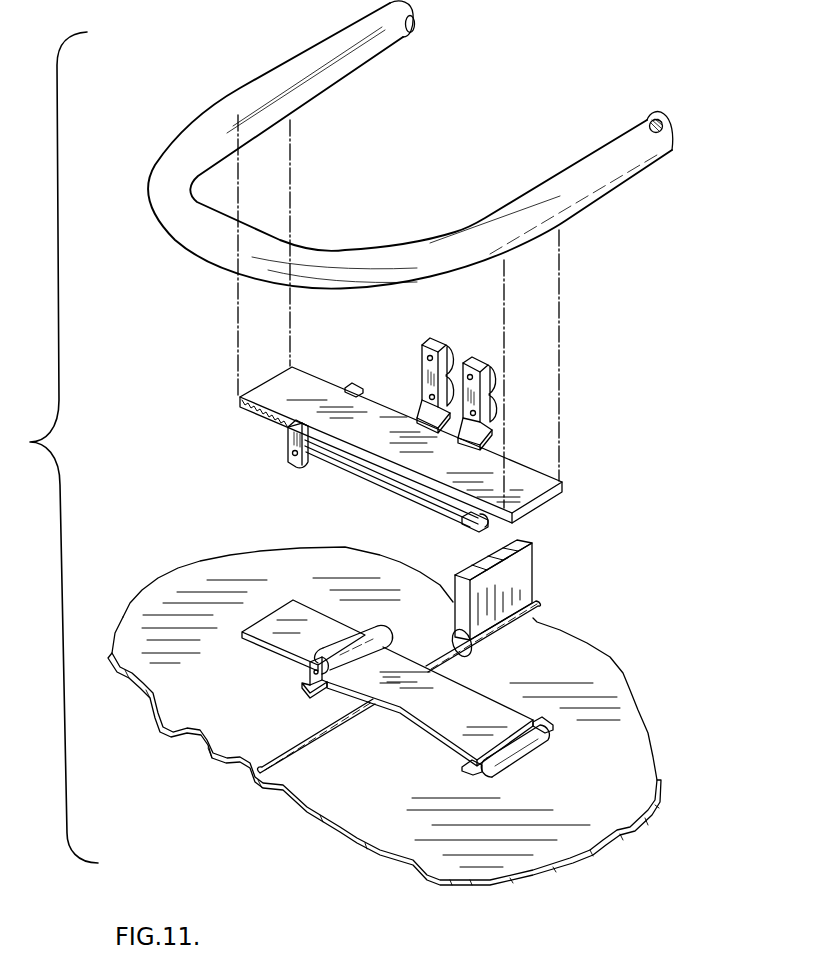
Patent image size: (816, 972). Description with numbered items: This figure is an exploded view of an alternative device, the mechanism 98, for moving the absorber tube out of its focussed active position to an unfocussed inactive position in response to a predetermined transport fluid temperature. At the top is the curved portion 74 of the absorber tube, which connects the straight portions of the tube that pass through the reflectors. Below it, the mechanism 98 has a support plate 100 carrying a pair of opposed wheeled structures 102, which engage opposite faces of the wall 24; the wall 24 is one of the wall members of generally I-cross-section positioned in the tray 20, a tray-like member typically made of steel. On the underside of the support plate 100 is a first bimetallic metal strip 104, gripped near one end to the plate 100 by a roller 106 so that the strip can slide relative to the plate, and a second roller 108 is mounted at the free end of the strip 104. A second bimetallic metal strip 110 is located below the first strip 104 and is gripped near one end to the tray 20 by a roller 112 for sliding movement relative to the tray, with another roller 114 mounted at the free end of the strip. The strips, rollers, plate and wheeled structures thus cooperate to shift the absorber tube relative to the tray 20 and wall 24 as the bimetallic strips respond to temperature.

The tray member 20 is at (373, 827).
The wall member 24 is at (513, 580).
The curved portion 74 is at (363, 253).
The mechanism 98 is at (208, 479).
The support plate 100 is at (525, 481).
The wheeled structures 102 is at (487, 362).
The first bimetallic metal strip 104 is at (384, 480).
The roller 106 is at (306, 468).
The second roller 108 is at (487, 526).
The second bimetallic metal strip 110 is at (443, 725).
The roller 112 is at (300, 651).
The roller 114 is at (522, 738).